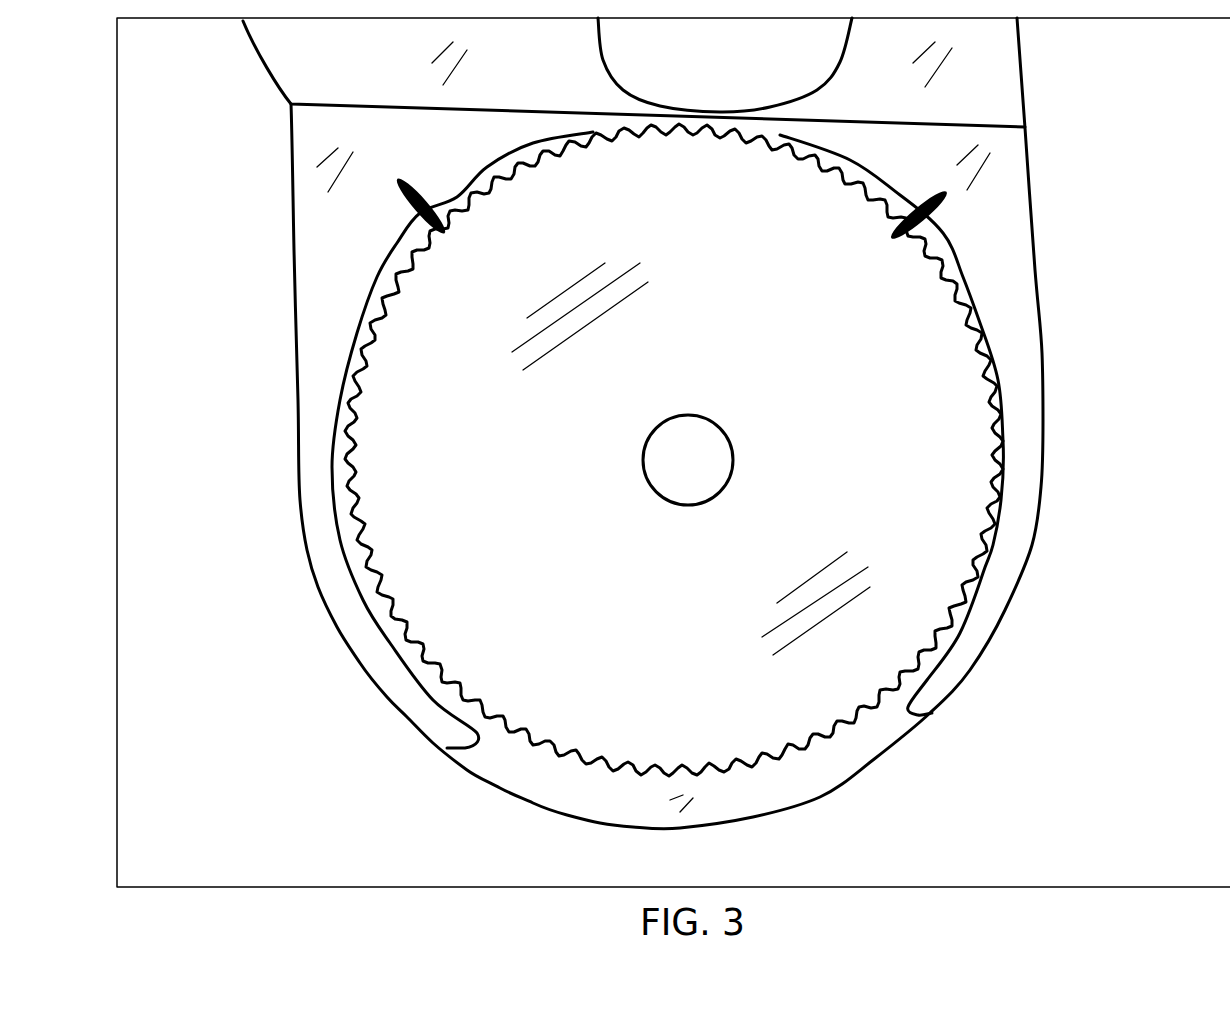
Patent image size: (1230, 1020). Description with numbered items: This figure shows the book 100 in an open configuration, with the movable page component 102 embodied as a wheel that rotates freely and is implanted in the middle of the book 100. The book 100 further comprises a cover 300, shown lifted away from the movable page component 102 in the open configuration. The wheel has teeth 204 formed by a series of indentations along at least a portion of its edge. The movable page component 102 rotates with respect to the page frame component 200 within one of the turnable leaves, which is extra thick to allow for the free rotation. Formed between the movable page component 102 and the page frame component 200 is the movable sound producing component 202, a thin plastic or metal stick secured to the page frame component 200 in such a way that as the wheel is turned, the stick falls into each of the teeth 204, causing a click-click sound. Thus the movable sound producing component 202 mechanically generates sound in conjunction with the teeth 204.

The book 100 is at (198, 105).
The movable page component 102 is at (470, 612).
The page frame component 200 is at (1004, 197).
The movable sound producing component 202 is at (410, 202).
The teeth 204 is at (635, 770).
The cover 300 is at (973, 90).